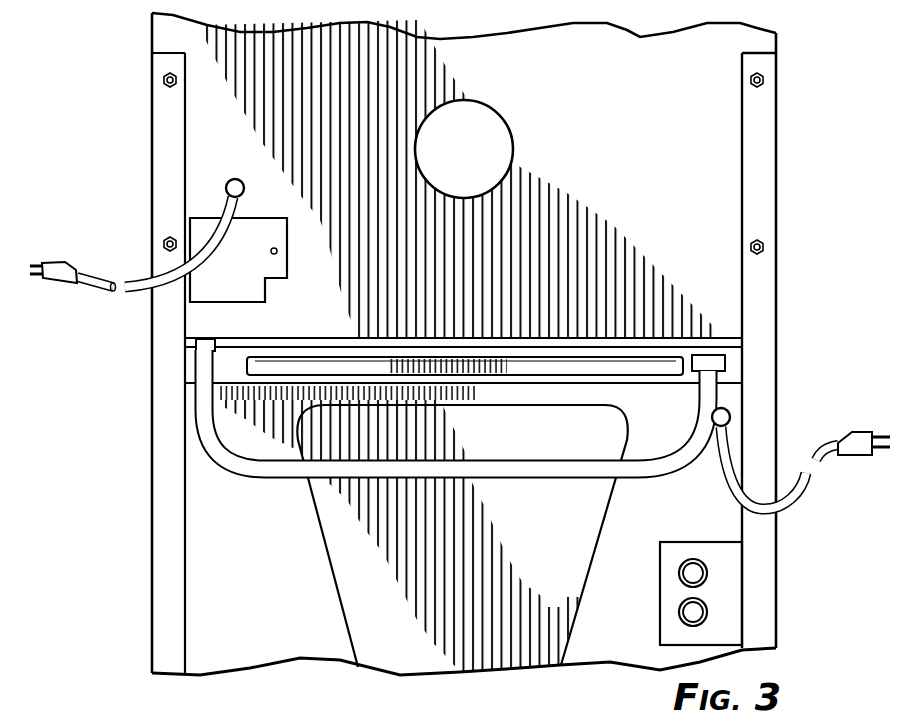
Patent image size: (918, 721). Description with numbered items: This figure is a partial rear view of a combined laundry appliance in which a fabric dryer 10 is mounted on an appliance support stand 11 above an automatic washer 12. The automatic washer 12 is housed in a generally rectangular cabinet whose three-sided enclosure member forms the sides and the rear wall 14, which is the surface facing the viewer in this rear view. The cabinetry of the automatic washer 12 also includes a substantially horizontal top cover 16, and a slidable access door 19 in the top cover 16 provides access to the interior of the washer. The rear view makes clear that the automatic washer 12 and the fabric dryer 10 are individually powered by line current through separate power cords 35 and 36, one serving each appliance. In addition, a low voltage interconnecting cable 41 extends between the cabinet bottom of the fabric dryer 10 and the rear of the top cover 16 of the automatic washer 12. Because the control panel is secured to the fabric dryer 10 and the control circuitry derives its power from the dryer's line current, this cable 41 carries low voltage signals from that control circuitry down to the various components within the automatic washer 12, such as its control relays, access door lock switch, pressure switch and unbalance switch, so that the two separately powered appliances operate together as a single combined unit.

The fabric dryer 10 is at (764, 41).
The appliance support stand 11 is at (802, 250).
The automatic washer 12 is at (279, 680).
The rear wall 14 is at (259, 607).
The top cover 16 is at (225, 362).
The slidable access door 19 is at (302, 367).
The low voltage interconnecting cable 41 is at (238, 468).
The power cord 35 is at (807, 478).
The power cord 36 is at (88, 291).